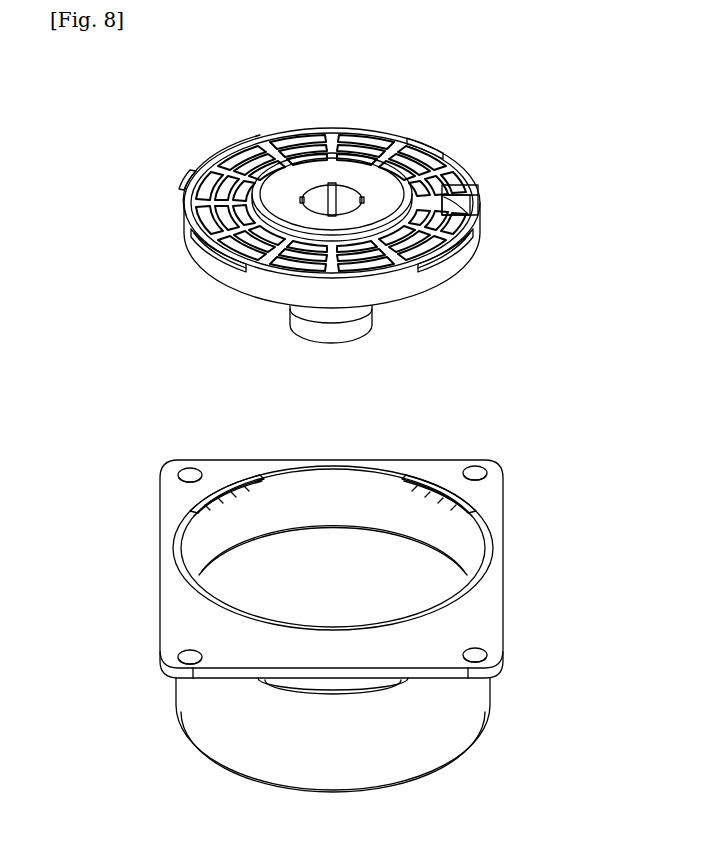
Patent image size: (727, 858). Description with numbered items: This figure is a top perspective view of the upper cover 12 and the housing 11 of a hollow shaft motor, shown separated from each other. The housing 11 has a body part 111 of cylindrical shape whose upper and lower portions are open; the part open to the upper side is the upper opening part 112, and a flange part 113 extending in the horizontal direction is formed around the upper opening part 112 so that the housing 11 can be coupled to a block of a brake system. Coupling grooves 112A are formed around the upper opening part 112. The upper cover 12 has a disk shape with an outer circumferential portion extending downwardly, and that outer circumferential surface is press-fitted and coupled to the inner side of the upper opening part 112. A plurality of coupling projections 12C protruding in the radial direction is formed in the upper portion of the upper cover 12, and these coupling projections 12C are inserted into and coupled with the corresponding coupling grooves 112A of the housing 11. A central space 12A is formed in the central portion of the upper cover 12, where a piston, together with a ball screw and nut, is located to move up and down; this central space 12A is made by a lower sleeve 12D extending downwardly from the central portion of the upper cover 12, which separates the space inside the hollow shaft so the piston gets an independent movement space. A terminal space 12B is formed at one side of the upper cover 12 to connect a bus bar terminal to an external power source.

The housing 11 is at (391, 620).
The body part 111 is at (420, 758).
The upper opening part 112 is at (362, 496).
The coupling grooves 112A is at (462, 497).
The flange part 113 is at (490, 617).
The upper cover 12 is at (346, 225).
The central space 12A is at (352, 200).
The terminal space 12B is at (479, 203).
The coupling projections 12C is at (224, 146).
The lower sleeve 12D is at (304, 320).